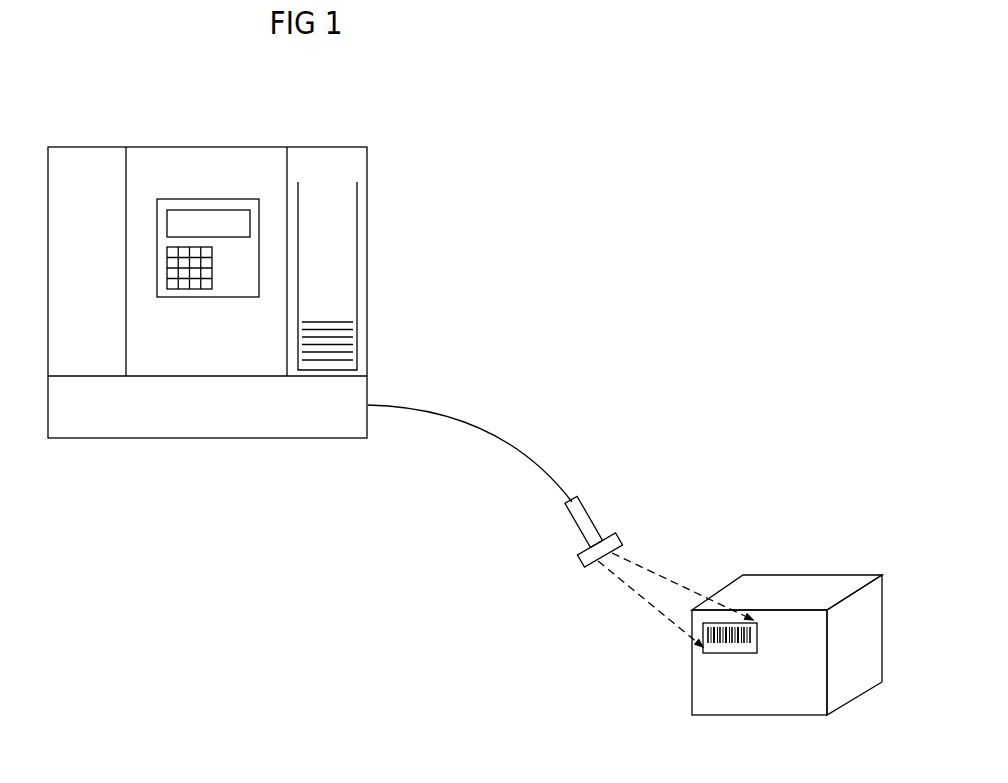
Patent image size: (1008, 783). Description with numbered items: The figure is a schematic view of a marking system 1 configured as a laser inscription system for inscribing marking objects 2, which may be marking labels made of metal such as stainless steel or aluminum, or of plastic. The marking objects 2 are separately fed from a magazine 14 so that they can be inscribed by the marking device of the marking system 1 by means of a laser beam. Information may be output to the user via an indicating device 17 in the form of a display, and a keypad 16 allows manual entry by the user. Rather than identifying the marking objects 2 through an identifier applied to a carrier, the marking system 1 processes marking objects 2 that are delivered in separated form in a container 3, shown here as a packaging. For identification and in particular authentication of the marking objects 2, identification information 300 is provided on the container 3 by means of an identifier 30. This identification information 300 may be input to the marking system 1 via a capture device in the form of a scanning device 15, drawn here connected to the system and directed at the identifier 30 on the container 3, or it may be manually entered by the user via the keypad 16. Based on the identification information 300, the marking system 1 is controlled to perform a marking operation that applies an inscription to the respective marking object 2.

The marking system 1 is at (392, 142).
The marking objects 2 is at (387, 342).
The container 3 is at (818, 542).
The magazine 14 is at (360, 282).
The scanning device 15 is at (593, 520).
The keypad 16 is at (187, 265).
The indicating device 17 is at (230, 218).
The identifier 30 is at (670, 703).
The identification information 300 is at (731, 667).